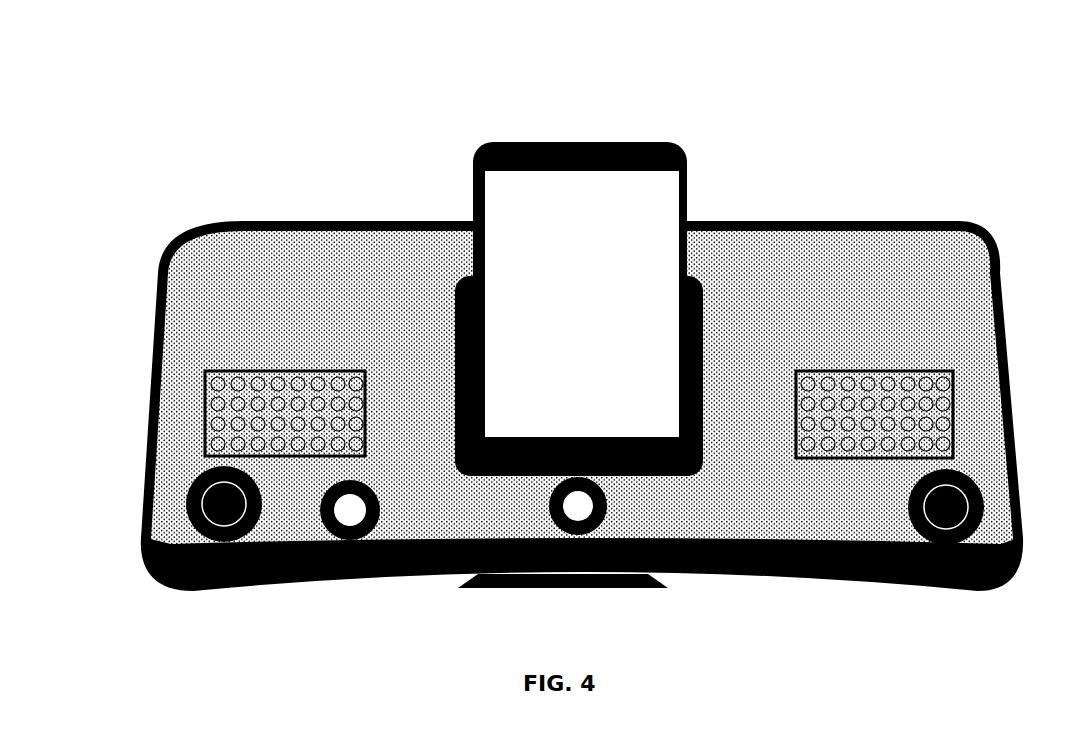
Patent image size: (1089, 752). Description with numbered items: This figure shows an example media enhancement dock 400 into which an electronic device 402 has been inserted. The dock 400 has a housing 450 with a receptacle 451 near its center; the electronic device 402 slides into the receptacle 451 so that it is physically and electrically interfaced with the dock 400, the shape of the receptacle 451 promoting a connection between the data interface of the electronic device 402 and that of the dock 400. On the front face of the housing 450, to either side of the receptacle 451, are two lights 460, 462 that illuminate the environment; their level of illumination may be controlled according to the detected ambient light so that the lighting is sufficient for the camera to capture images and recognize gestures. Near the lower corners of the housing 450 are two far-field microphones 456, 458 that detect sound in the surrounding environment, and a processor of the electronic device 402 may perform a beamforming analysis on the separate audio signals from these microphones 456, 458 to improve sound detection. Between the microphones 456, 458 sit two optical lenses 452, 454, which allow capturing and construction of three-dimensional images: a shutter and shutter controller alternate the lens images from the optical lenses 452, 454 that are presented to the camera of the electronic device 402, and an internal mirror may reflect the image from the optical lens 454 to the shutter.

The media enhancement dock 400 is at (133, 62).
The electronic device 402 is at (506, 138).
The housing 450 is at (860, 215).
The receptacle 451 is at (692, 262).
The optical lens 452 is at (545, 580).
The optical lens 454 is at (333, 578).
The far-field microphone 456 is at (200, 578).
The far-field microphone 458 is at (905, 578).
The light 460 is at (203, 362).
The light 462 is at (925, 362).